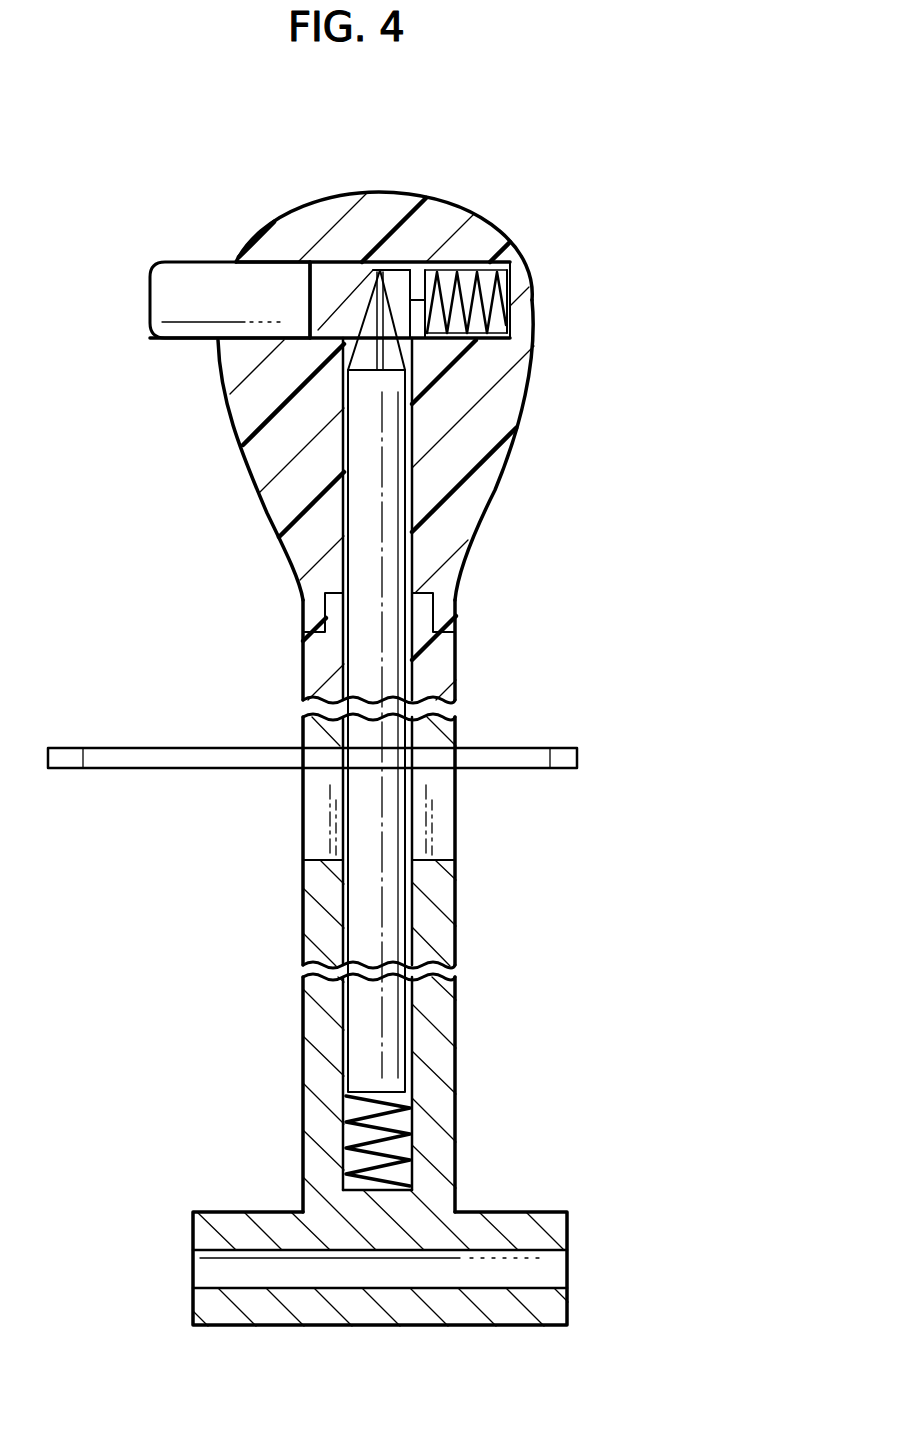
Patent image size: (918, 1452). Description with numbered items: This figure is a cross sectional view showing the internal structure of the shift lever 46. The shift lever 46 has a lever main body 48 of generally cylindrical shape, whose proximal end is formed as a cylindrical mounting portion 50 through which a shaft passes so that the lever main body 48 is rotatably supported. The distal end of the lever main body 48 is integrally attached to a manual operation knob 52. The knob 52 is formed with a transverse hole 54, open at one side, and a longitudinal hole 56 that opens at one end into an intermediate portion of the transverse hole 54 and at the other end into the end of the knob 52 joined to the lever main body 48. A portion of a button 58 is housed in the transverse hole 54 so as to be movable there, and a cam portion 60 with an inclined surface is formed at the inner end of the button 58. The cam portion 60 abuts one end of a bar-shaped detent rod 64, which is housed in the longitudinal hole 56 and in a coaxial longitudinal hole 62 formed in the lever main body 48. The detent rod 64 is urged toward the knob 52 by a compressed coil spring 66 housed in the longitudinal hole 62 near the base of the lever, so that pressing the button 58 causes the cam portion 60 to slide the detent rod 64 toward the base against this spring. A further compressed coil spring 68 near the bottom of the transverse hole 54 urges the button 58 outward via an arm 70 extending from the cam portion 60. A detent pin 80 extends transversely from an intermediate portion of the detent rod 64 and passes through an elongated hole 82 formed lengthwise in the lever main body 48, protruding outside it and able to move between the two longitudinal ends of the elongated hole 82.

The shift lever 46 is at (594, 326).
The lever main body 48 is at (460, 928).
The mounting portion 50 is at (518, 1212).
The manual operation knob 52 is at (505, 254).
The transverse hole 54 is at (355, 274).
The longitudinal hole 56 is at (400, 488).
The button 58 is at (190, 272).
The cam portion 60 is at (388, 280).
The longitudinal hole 62 is at (410, 918).
The detent rod 64 is at (412, 546).
The compressed coil spring 66 is at (400, 1118).
The compressed coil spring 68 is at (470, 320).
The arm 70 is at (435, 296).
The detent pin 80 is at (83, 770).
The elongated hole 82 is at (305, 843).